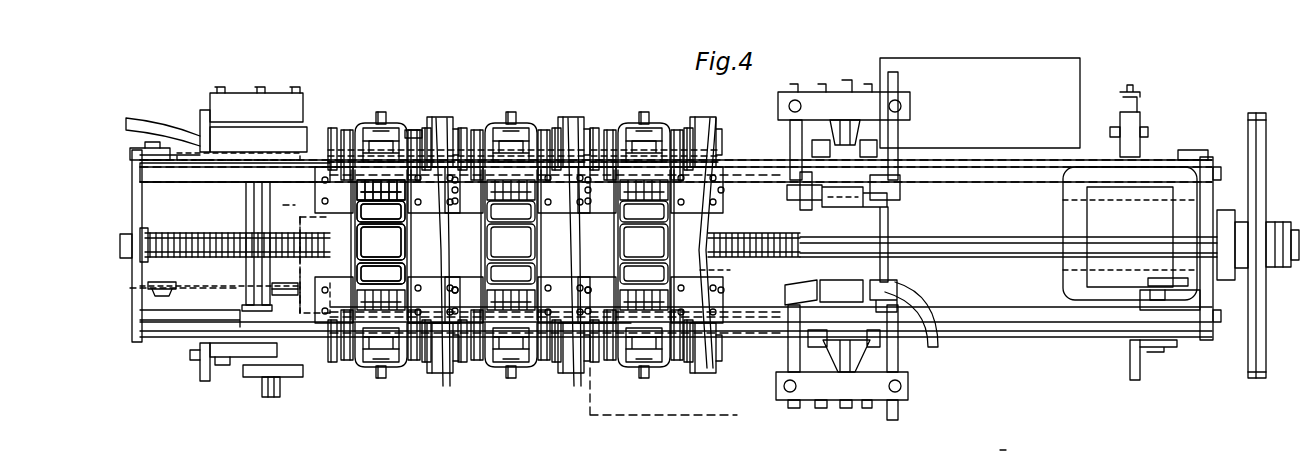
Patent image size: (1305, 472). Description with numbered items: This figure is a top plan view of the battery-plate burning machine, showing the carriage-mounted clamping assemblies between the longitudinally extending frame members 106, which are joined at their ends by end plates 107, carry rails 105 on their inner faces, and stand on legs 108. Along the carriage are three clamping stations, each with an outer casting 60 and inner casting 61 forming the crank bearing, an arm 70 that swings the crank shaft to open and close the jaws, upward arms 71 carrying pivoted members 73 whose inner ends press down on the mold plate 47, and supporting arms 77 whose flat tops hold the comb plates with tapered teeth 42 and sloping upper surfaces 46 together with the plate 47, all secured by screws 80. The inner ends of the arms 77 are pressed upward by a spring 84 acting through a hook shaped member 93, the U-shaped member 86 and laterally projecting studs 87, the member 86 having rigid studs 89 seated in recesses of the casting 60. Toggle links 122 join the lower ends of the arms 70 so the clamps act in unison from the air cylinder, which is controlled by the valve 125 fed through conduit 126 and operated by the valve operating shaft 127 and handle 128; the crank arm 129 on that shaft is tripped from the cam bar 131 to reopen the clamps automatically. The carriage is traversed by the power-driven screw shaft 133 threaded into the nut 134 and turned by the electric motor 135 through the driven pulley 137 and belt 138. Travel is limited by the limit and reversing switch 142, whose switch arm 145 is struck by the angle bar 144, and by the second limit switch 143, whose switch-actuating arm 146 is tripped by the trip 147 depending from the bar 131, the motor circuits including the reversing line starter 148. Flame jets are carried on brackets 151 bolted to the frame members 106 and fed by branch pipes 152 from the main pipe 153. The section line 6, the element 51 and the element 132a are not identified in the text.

The section line 6 is at (311, 242).
The tapered teeth 42 is at (510, 242).
The upper surfaces 46 is at (380, 182).
The mold plate 47 is at (455, 204).
The spool 51 is at (504, 242).
The outer casting 60 is at (372, 135).
The inner casting 61 is at (388, 176).
The arm 70 is at (438, 118).
The arms 71 is at (340, 132).
The members 73 is at (346, 130).
The arms 77 is at (355, 172).
The screws 80 is at (358, 190).
The spring 84 is at (410, 130).
The U-shaped member 86 is at (492, 125).
The laterally projecting studs 87 is at (1003, 452).
The rigid studs 89 is at (512, 151).
The hook shaped member 93 is at (380, 112).
The rails 105 is at (985, 175).
The longitudinally extending frame members 106 is at (985, 160).
The end plates 107 is at (142, 212).
The legs 108 is at (204, 115).
The toggle links 122 is at (440, 118).
The valve 125 is at (250, 125).
The conduit 126 is at (150, 124).
The valve operating shaft 127 is at (248, 200).
The handle 128 is at (278, 398).
The crank arm 129 is at (240, 307).
The cam bar 131 is at (722, 312).
The slide guide 132a is at (735, 315).
The screw shaft 133 is at (955, 240).
The nut 134 is at (300, 222).
The electric motor 135 is at (1065, 205).
The driven pulley 137 is at (1272, 178).
The belt 138 is at (1257, 113).
The limit and reversing switch 142 is at (1150, 308).
The second limit switch 143 is at (192, 290).
The angle bar 144 is at (712, 273).
The switch arm 145 is at (1150, 281).
The switch-actuating arm 146 is at (160, 283).
The trip 147 is at (285, 283).
The reversing line starter 148 is at (1075, 78).
The brackets 151 is at (790, 132).
The branch pipes 152 is at (845, 198).
The main pipe 153 is at (922, 310).